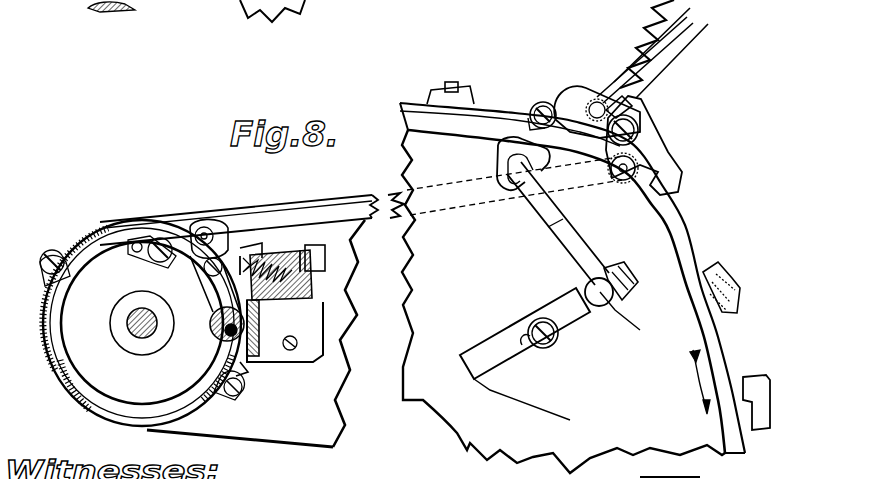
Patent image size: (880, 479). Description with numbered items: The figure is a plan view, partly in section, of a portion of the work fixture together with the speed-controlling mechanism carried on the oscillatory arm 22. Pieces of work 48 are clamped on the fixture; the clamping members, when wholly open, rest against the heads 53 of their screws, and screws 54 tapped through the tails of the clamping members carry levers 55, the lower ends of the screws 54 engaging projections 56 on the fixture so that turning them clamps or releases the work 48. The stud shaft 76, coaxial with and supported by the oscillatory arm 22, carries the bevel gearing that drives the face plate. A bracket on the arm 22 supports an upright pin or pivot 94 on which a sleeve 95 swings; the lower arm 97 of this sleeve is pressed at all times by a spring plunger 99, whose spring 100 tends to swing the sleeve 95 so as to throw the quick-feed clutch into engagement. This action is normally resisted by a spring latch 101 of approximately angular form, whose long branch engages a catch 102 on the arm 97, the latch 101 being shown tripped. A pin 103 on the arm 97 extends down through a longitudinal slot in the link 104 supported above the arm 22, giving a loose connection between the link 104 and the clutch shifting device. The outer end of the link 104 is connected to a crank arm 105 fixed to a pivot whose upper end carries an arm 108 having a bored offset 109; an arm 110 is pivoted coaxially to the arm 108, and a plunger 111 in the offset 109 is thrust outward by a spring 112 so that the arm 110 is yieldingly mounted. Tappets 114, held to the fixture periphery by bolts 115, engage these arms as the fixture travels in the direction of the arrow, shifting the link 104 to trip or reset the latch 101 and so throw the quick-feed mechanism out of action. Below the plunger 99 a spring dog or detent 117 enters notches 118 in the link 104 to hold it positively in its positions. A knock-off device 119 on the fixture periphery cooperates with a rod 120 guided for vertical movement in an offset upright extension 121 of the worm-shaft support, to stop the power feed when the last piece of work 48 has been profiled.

The oscillatory arm 22 is at (318, 435).
The pieces of work 48 is at (566, 288).
The heads of the screws 53 is at (560, 352).
The screws 54 is at (612, 306).
The levers 55 is at (577, 255).
The projections 56 is at (628, 300).
The stud shaft 76 is at (130, 333).
The upright pin or pivot 94 is at (240, 366).
The sleeve 95 is at (207, 377).
The lower arm 97 is at (203, 306).
The spring plunger 99 is at (261, 322).
The spring 100 is at (297, 296).
The spring latch 101 is at (167, 262).
The catch 102 is at (222, 315).
The pin 103 is at (205, 231).
The link 104 is at (239, 220).
The crank arm 105 is at (628, 190).
The arm 108 is at (650, 140).
The bored offset 109 is at (665, 60).
The arm 110 is at (586, 96).
The plunger 111 is at (640, 96).
The spring 112 is at (690, 30).
The tappets 114 is at (440, 90).
The bolts 115 is at (453, 86).
The spring dog or detent 117 is at (262, 240).
The notches 118 is at (250, 246).
The throw out member or knock off device 119 is at (770, 395).
The rod 120 is at (536, 103).
The offset upright extension 121 is at (528, 117).